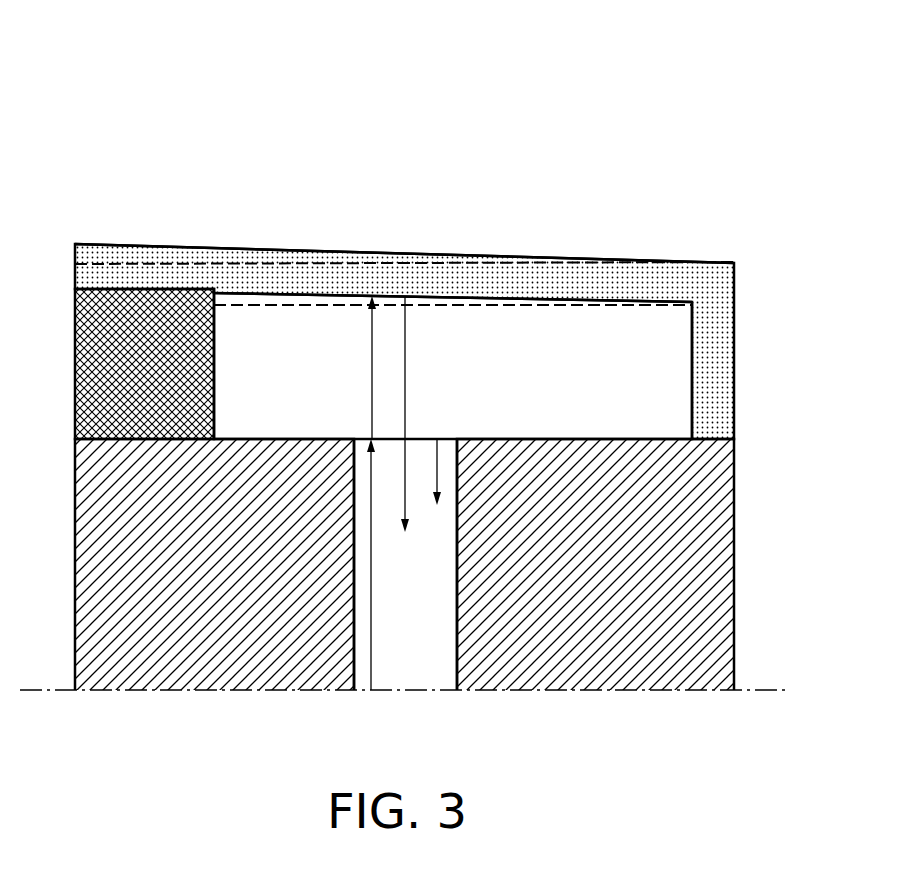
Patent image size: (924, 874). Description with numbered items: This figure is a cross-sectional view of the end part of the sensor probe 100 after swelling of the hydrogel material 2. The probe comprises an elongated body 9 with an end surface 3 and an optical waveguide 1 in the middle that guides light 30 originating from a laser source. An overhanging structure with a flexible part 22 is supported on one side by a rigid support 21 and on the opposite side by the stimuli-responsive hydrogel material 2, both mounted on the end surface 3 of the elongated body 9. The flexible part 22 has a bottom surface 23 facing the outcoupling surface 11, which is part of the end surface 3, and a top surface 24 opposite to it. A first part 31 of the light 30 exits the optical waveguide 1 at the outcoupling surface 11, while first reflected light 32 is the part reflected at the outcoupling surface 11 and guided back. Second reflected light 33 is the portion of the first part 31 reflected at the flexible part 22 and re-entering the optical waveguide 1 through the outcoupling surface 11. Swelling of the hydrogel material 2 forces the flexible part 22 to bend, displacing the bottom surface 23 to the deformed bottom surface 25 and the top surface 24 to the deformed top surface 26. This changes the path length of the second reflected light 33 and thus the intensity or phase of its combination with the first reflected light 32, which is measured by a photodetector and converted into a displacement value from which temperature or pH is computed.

The sensor probe 100 is at (141, 88).
The optical waveguide 1 is at (428, 682).
The hydrogel material 2 is at (80, 362).
The end surface 3 is at (614, 432).
The elongated body 9 is at (204, 690).
The outcoupling surface 11 is at (430, 432).
The rigid support 21 is at (725, 362).
The flexible part 22 is at (616, 272).
The bottom surface 23 is at (530, 312).
The top surface 24 is at (462, 258).
The deformed bottom surface 25 is at (272, 304).
The deformed top surface 26 is at (327, 248).
The light 30 is at (372, 652).
The first part of the light 31 is at (372, 368).
The first reflected light 32 is at (437, 473).
The second reflected light 33 is at (405, 338).